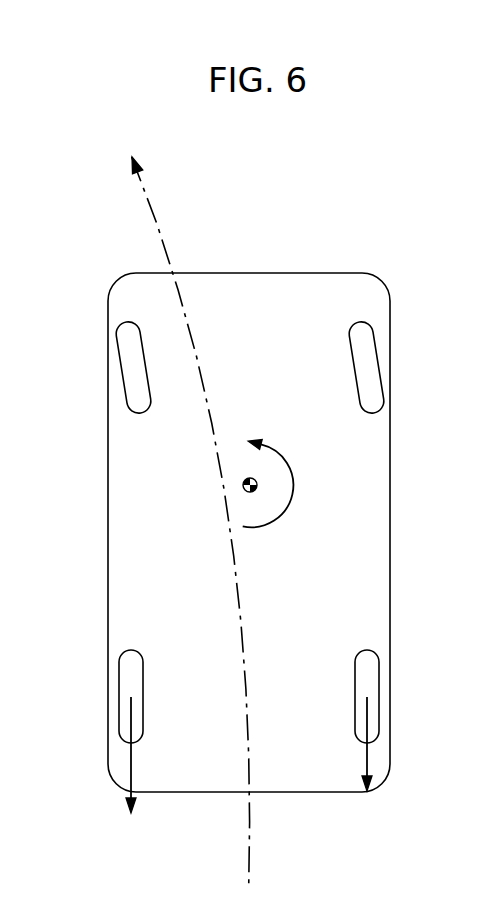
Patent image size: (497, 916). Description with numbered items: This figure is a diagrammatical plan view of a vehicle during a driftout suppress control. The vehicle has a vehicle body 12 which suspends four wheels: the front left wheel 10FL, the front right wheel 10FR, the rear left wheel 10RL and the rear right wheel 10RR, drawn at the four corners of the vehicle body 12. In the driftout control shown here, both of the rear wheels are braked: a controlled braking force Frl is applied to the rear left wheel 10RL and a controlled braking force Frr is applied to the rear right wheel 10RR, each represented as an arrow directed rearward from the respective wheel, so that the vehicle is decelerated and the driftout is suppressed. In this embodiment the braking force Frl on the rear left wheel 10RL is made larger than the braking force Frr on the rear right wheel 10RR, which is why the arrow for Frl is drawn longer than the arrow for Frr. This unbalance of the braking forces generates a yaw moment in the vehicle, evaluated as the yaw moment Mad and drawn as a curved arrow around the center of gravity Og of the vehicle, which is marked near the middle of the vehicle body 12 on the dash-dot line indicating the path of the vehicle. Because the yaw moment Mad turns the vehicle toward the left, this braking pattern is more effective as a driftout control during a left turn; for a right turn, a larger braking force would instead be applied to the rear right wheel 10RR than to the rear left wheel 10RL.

The vehicle body 12 is at (390, 509).
The front left wheel 10FL is at (113, 359).
The front right wheel 10FR is at (385, 363).
The rear left wheel 10RL is at (119, 694).
The rear right wheel 10RR is at (378, 692).
The braking force applied to the rear left wheel Frl is at (120, 759).
The braking force applied to the rear right wheel Frr is at (377, 760).
The center of gravity Og is at (245, 492).
The yaw moment Mad is at (290, 498).